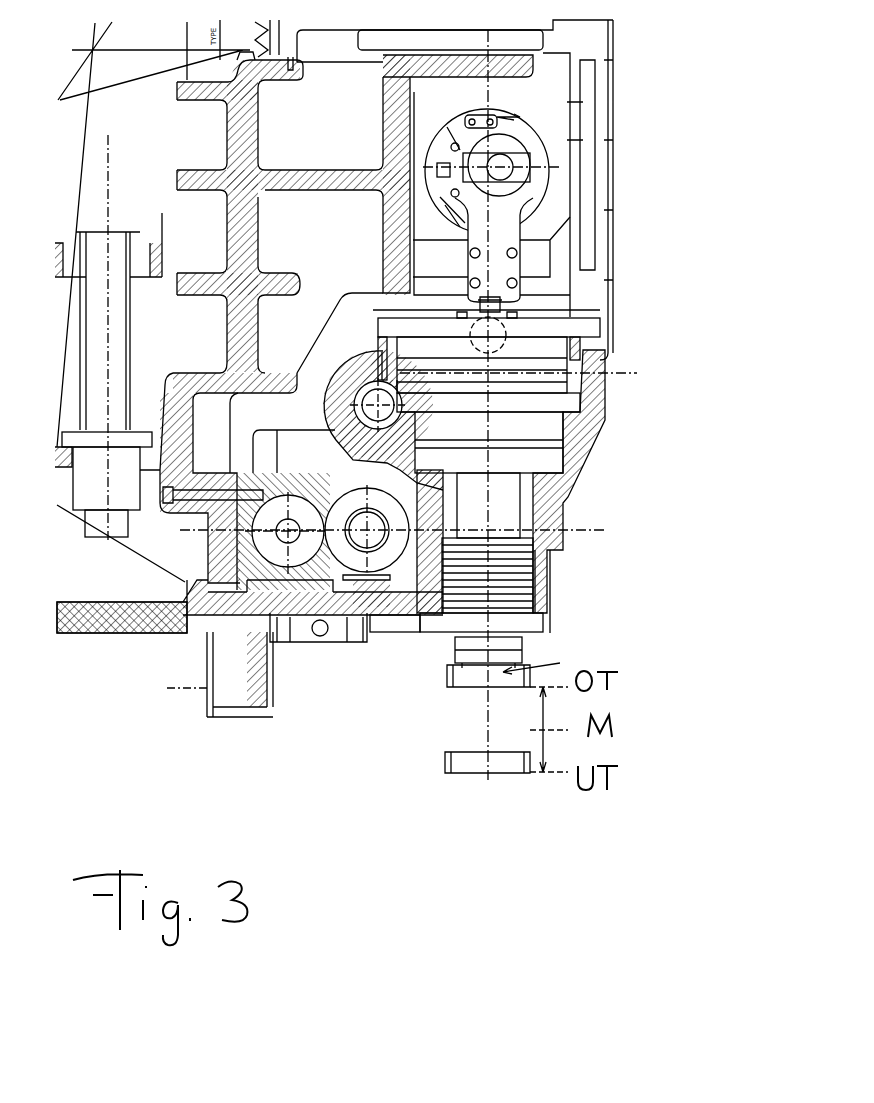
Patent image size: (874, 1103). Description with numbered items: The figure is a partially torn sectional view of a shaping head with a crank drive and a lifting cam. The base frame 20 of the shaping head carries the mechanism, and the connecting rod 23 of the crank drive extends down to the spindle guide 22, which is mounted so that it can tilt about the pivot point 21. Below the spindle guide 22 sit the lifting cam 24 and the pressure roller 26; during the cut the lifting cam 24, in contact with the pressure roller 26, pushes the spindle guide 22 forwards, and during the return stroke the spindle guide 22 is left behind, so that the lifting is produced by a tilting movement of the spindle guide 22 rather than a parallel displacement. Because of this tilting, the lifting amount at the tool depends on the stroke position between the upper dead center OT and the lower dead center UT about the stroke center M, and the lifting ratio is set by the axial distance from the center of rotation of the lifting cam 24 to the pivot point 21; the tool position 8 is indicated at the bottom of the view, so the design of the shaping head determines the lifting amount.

The base frame 20 is at (690, 88).
The connecting rod 23 is at (510, 227).
The pivot point 21 is at (488, 375).
The spindle guide 22 is at (497, 543).
The lifting cam 24 is at (290, 537).
The pressure roller 26 is at (368, 535).
The workpiece die position 8 is at (441, 702).